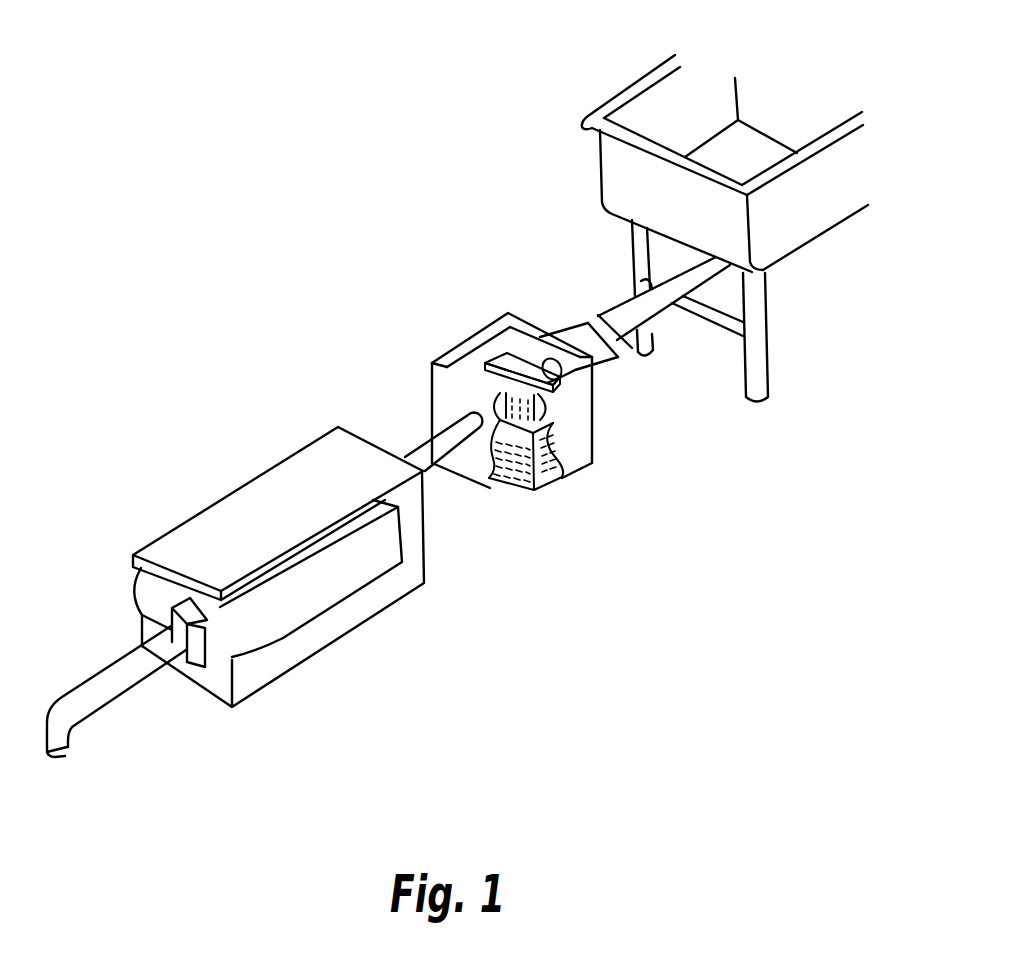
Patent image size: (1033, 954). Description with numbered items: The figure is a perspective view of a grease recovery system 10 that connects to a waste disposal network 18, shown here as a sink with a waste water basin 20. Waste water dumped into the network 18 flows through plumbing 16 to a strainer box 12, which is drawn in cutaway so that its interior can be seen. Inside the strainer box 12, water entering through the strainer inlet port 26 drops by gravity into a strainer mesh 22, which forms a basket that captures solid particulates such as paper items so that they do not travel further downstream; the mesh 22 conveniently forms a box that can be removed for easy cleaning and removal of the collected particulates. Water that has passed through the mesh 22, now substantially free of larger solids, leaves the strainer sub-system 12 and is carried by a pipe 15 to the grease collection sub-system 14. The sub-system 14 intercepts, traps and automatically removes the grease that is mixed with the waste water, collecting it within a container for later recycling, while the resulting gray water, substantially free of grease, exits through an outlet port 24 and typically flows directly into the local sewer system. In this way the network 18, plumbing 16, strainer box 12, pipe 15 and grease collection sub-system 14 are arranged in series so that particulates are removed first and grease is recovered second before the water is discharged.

The grease recovery system 10 is at (587, 614).
The strainer box 12 is at (592, 450).
The grease collection sub-system 14 is at (425, 575).
The pipe 15 is at (422, 440).
The plumbing 16 is at (622, 310).
The waste disposal network 18 is at (799, 216).
The waste water basin 20 is at (699, 92).
The strainer mesh 22 is at (543, 490).
The outlet port 24 is at (70, 745).
The strainer inlet port 26 is at (545, 358).